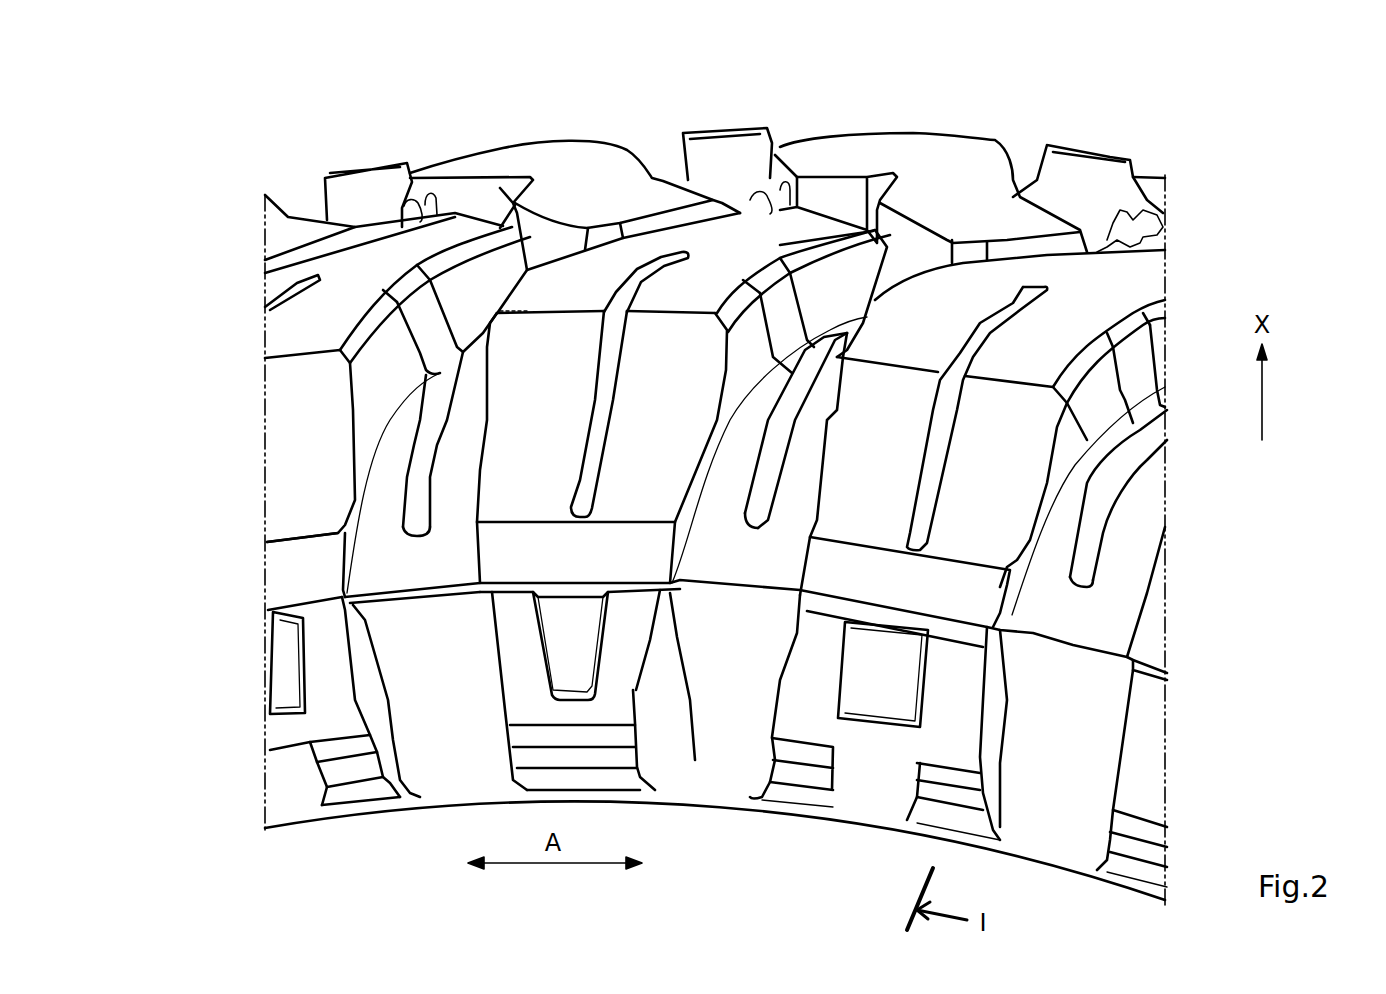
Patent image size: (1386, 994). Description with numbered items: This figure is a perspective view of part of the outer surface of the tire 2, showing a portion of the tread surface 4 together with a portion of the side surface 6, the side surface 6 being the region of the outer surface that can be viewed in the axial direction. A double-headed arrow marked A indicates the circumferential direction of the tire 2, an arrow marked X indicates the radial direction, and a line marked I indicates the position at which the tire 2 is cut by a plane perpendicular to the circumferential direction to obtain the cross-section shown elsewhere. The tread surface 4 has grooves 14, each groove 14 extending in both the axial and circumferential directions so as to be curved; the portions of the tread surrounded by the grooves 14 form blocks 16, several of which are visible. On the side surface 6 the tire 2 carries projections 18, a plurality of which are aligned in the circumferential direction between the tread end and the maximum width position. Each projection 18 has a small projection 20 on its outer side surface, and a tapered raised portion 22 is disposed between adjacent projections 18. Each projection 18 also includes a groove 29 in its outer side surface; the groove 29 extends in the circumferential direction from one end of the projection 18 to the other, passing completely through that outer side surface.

The tire 2 is at (692, 468).
The tread surface 4 is at (884, 115).
The side surface 6 is at (248, 757).
The groove 14 is at (475, 336).
The block 16 is at (585, 160).
The projection 18 is at (385, 742).
The small projection 20 is at (880, 703).
The raised portion 22 is at (1083, 645).
The groove 29 is at (510, 587).